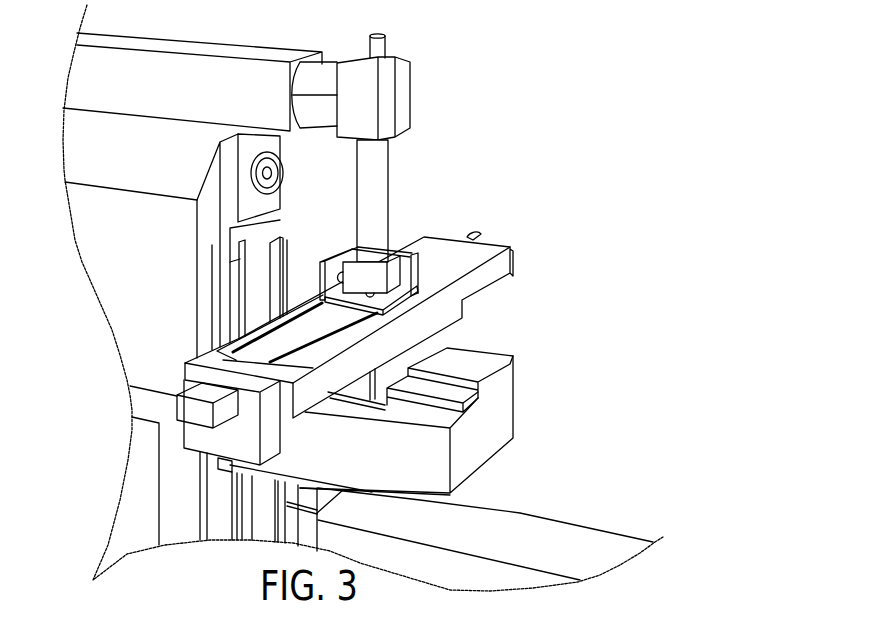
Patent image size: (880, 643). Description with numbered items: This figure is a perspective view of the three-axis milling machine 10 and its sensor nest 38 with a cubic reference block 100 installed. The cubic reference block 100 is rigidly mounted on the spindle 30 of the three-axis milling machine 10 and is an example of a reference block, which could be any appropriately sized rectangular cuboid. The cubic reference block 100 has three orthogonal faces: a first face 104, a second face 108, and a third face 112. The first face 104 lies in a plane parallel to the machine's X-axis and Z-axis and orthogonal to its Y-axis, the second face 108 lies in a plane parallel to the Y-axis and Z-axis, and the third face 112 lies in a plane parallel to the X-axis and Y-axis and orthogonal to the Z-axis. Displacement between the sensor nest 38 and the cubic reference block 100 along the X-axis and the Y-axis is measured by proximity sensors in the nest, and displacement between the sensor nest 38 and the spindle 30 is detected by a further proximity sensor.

The three-axis milling machine 10 is at (512, 95).
The spindle 30 is at (390, 152).
The sensor nest 38 is at (393, 262).
The cubic reference block 100 is at (401, 275).
The first face 104 is at (331, 260).
The second face 108 is at (416, 279).
The third face 112 is at (364, 300).